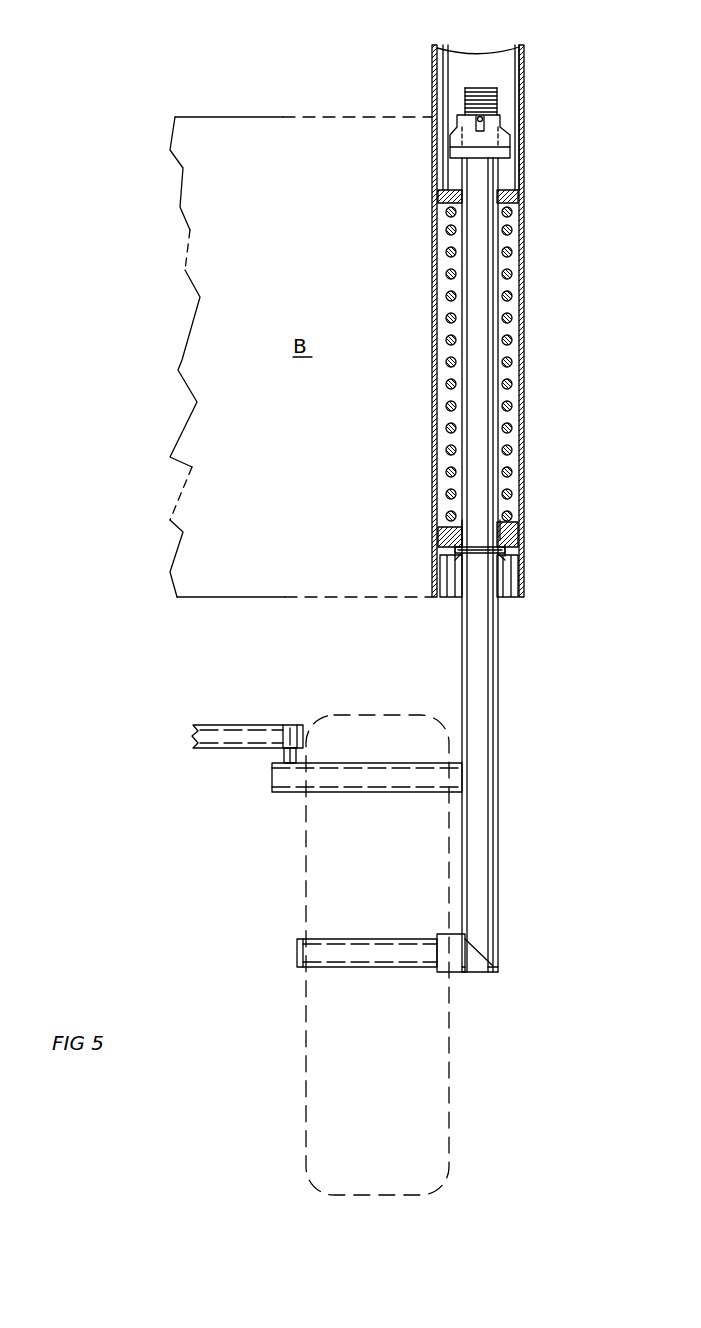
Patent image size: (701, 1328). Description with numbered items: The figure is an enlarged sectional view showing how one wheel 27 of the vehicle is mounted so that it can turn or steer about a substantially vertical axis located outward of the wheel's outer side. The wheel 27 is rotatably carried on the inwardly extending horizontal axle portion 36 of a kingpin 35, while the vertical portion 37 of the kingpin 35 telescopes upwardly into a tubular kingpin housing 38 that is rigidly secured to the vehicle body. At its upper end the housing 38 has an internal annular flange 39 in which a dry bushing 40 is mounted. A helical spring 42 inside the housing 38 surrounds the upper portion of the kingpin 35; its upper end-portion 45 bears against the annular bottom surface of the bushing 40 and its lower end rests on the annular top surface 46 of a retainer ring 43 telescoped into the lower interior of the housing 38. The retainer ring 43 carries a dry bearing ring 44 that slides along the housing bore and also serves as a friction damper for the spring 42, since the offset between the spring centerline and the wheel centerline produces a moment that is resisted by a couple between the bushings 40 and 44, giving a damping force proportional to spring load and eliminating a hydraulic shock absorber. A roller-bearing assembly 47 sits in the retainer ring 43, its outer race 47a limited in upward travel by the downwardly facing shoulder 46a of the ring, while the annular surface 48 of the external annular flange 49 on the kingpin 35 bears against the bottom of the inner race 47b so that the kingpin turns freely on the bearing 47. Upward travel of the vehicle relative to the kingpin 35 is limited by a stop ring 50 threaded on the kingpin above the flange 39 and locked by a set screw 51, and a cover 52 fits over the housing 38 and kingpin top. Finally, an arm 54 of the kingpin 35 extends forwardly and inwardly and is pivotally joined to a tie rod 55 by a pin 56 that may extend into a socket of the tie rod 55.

The wheel 27 is at (452, 1045).
The kingpin 35 is at (504, 819).
The horizontal axle portion 36 is at (300, 947).
The vertical portion 37 is at (500, 693).
The kingpin housing 38 is at (437, 404).
The internal annular flange 39 is at (447, 192).
The dry bushing 40 is at (505, 196).
The helical spring 42 is at (512, 346).
The retainer ring 43 is at (512, 526).
The dry bearing ring 44 is at (515, 537).
The upper spring end 45 is at (446, 210).
The annular top surface 46 is at (508, 518).
The downwardly facing shoulder 46a is at (500, 528).
The roller-bearing assembly 47 is at (452, 597).
The outer race 47a is at (446, 540).
The inner race 47b is at (468, 525).
The annular surface 48 is at (478, 548).
The external annular flange 49 is at (512, 548).
The stop ring 50 is at (458, 82).
The set screw 51 is at (483, 120).
The cover 52 is at (525, 70).
The arm 54 is at (378, 793).
The tie rod 55 is at (237, 730).
The pin 56 is at (289, 757).